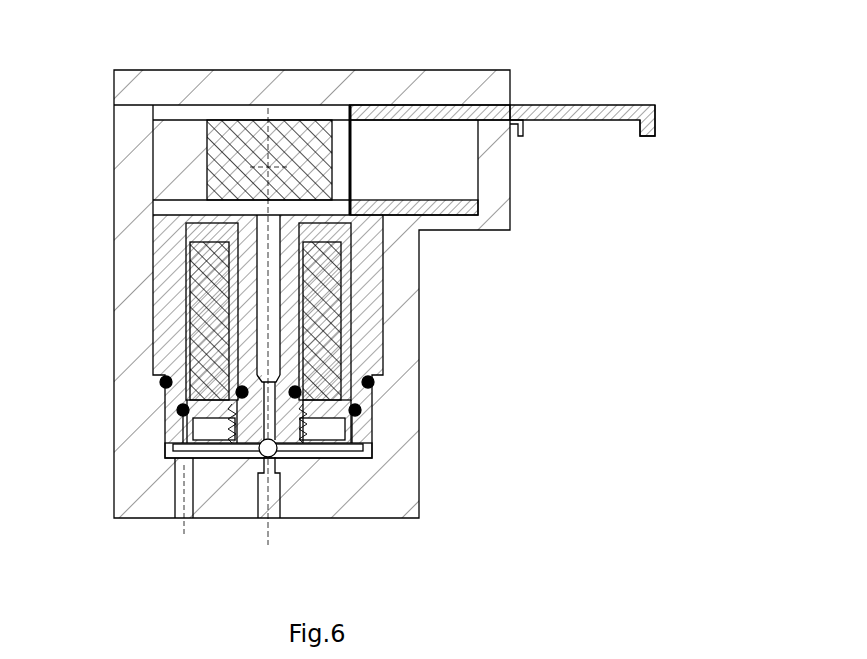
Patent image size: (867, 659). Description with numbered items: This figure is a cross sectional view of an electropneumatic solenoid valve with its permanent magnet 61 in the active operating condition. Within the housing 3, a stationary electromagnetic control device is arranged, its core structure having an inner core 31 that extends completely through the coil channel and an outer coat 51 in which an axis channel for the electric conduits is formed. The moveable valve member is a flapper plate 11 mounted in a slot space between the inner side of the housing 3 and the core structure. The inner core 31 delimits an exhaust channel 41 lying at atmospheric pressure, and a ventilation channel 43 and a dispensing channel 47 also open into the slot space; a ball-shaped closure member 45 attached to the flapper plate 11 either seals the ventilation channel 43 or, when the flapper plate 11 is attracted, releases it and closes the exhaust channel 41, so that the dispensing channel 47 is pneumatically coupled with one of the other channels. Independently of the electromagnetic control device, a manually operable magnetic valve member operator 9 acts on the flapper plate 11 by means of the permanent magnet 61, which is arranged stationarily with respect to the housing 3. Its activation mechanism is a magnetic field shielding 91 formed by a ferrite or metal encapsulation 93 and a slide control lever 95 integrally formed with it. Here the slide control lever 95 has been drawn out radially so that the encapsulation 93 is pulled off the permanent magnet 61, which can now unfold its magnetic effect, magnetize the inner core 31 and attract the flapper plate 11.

The housing 3 is at (405, 447).
The valve member operator 9 is at (519, 93).
The flapper plate 11 is at (225, 452).
The inner core 31 is at (247, 323).
The exhaust channel 41 is at (263, 278).
The ventilation channel 43 is at (268, 507).
The closure member 45 is at (276, 455).
The dispensing channel 47 is at (180, 494).
The outer coat 51 is at (372, 332).
The permanent magnet 61 is at (310, 132).
The magnetic field shielding 91 is at (640, 104).
The encapsulation 93 is at (455, 110).
The slide control lever 95 is at (610, 120).